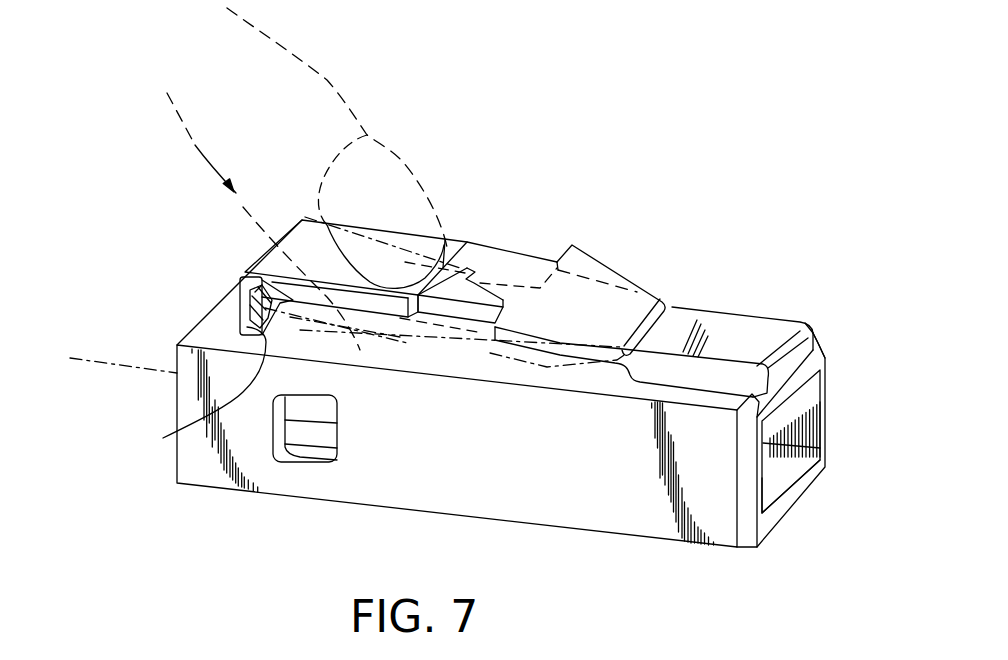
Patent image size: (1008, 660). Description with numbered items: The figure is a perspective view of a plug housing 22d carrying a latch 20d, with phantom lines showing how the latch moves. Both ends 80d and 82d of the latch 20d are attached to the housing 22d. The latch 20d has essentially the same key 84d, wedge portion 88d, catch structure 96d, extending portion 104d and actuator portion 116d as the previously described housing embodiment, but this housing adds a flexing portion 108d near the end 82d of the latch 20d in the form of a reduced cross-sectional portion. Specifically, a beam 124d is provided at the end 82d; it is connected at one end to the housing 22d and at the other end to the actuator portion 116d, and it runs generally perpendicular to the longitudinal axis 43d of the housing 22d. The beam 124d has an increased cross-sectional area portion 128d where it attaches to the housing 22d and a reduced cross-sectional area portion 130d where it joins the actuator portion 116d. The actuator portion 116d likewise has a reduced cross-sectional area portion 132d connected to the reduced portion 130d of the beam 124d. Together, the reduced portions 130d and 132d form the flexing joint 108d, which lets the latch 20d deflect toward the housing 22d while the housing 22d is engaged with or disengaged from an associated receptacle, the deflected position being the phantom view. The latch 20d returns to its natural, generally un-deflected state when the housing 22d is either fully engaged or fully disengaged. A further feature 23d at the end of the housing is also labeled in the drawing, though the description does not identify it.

The latch 20d is at (633, 273).
The plug housing 22d is at (545, 540).
The passage 23d is at (762, 478).
The longitudinal axis 43d is at (868, 452).
The end of the latch 80d is at (812, 333).
The end of the latch 82d is at (243, 303).
The key 84d is at (733, 328).
The wedge portion 88d is at (596, 264).
The catch structure 96d is at (549, 255).
The extending portion 104d is at (480, 267).
The flexing portion 108d is at (245, 273).
The actuator portion 116d is at (402, 230).
The beam 124d is at (247, 293).
The increased cross-sectional area portion 128d is at (252, 328).
The reduced cross-sectional area portion 130d is at (185, 391).
The reduced cross-sectional area portion 132d is at (273, 303).